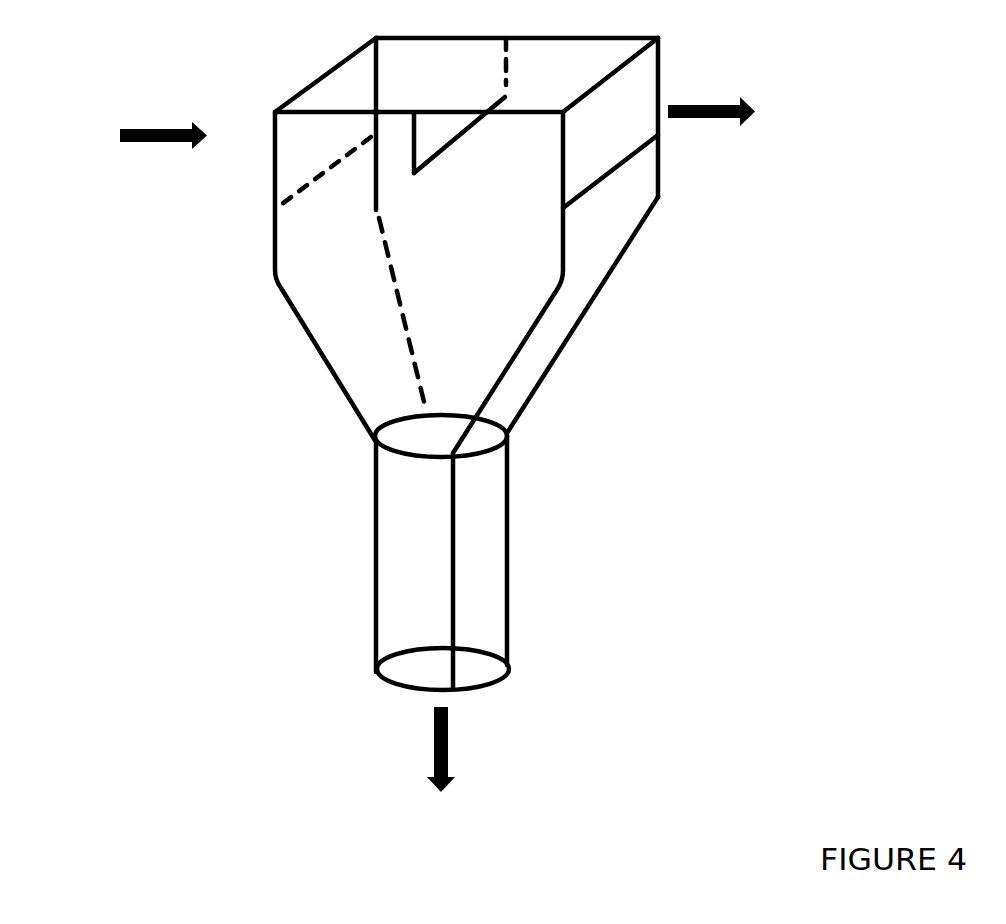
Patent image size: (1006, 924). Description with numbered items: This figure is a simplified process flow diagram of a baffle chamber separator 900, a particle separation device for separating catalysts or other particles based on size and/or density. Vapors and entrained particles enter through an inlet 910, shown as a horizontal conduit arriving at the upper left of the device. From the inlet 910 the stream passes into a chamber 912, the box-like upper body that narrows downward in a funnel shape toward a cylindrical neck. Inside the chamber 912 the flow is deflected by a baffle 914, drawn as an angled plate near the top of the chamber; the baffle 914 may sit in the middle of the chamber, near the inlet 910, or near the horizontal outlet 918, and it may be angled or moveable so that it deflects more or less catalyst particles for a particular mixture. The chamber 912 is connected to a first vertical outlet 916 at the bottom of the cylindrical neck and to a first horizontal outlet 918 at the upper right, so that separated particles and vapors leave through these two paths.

The baffle chamber separator 900 is at (396, 364).
The inlet 910 is at (130, 135).
The chamber 912 is at (466, 364).
The baffle 914 is at (459, 135).
The first vertical outlet 916 is at (461, 749).
The first horizontal outlet 918 is at (711, 123).